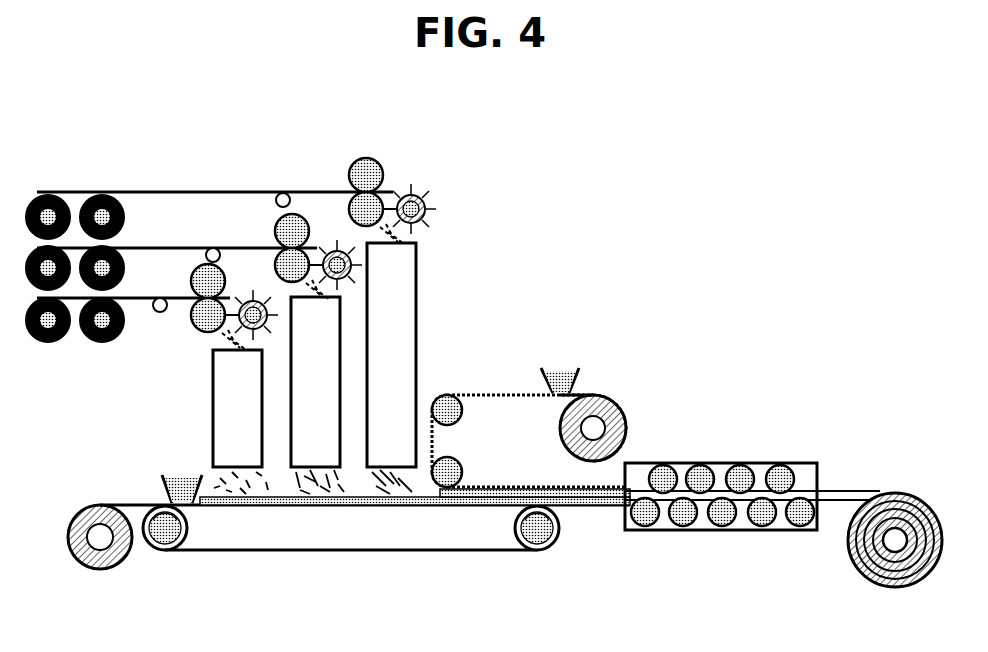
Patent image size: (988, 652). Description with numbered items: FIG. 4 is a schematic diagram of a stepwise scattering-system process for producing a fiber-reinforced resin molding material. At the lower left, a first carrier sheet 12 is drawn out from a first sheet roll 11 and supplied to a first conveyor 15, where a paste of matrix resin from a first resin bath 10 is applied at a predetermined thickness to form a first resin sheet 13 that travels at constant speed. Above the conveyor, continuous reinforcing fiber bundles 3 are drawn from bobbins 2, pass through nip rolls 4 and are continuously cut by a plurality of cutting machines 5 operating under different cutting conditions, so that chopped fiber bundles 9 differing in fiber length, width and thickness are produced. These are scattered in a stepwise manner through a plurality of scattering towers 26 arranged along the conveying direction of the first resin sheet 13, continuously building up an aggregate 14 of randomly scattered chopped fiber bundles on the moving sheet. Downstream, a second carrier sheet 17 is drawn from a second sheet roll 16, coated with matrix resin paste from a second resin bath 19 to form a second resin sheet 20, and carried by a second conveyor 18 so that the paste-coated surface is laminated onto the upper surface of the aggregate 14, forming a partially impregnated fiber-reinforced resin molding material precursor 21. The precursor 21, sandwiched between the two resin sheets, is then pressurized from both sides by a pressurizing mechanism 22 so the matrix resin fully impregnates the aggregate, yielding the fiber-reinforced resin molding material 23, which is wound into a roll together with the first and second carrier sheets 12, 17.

The bobbin 2 is at (125, 213).
The continuous reinforcing fiber bundle 3 is at (237, 188).
The nip roll 4 is at (387, 175).
The cutting machine 5 is at (276, 304).
The scattering tower 26 is at (250, 405).
The chopped fiber bundle [A] 9 is at (265, 484).
The first resin bath 10 is at (185, 478).
The first sheet roll 11 is at (95, 515).
The first carrier sheet 12 is at (140, 502).
The first resin sheet 13 is at (203, 510).
The aggregate comprising chopped fiber bundles [A] 14 is at (420, 506).
The first conveyor 15 is at (265, 530).
The second sheet roll 16 is at (628, 425).
The second carrier sheet 17 is at (580, 395).
The second conveyor 18 is at (465, 465).
The second resin bath 19 is at (563, 378).
The second resin sheet 20 is at (478, 391).
The fiber-reinforced resin molding material precursor 21 is at (575, 508).
The pressurizing mechanism 22 is at (700, 535).
The fiber-reinforced resin molding material [C] 23 is at (868, 555).